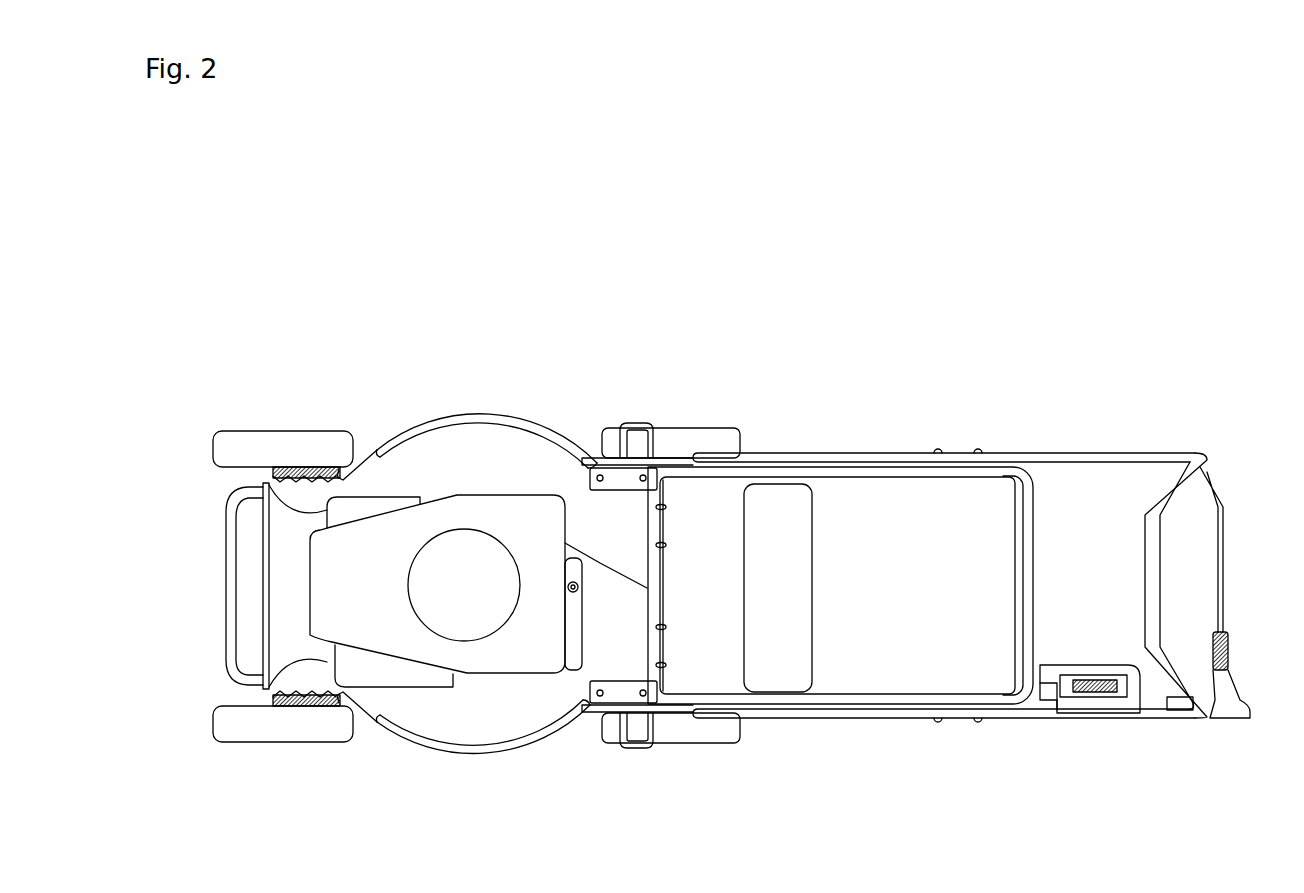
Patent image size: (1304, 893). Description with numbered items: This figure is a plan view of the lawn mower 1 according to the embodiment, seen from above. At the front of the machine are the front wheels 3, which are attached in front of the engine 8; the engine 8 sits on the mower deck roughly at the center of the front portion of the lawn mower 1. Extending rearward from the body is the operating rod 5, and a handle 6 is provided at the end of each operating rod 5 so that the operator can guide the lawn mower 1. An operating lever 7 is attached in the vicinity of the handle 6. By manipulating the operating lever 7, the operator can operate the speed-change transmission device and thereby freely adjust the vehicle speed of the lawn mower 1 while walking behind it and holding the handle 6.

The lawn mower 1 is at (730, 363).
The front wheels 3 is at (283, 742).
The operating rod 5 is at (882, 453).
The handle 6 is at (1160, 567).
The operating lever 7 is at (1098, 683).
The engine 8 is at (459, 518).